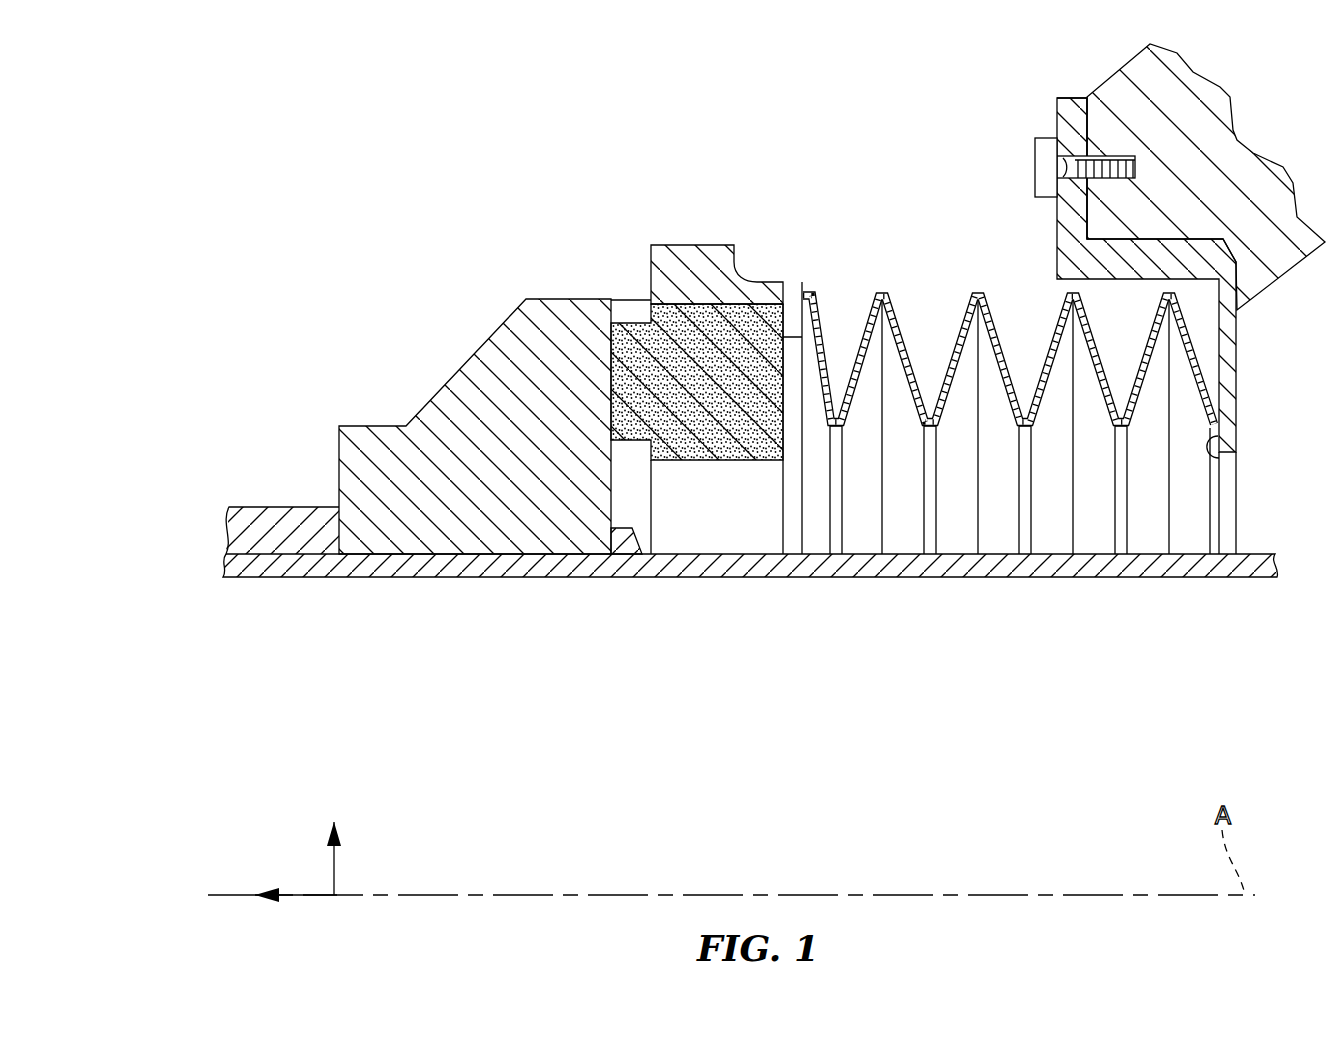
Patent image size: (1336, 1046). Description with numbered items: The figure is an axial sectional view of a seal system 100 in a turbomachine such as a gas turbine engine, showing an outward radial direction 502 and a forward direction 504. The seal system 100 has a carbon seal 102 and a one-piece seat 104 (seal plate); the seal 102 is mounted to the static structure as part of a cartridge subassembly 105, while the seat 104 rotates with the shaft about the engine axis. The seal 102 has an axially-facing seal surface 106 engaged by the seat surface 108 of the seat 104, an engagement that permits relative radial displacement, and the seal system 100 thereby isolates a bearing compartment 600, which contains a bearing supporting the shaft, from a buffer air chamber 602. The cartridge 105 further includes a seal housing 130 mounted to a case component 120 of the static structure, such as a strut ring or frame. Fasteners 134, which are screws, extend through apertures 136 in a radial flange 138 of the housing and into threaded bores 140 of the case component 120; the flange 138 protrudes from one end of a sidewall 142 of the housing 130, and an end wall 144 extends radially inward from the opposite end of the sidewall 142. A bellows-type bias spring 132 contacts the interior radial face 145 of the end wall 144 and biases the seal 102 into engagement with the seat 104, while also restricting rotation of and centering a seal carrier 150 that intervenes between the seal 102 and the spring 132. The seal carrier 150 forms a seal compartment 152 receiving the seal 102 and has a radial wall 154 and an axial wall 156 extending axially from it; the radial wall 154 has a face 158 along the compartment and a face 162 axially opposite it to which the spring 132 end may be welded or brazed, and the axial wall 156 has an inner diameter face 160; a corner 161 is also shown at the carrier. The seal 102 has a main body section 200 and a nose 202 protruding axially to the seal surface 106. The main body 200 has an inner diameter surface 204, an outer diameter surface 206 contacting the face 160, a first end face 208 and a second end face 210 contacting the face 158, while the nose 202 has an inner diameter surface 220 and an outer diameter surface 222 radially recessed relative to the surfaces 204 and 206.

The seal system 100 is at (613, 168).
The seal 102 is at (689, 470).
The seat 104 is at (420, 499).
The cartridge subassembly 105 is at (807, 160).
The seal surface 106 is at (611, 373).
The seat surface 108 is at (636, 425).
The case component 120 is at (1149, 134).
The seal housing 130 is at (903, 238).
The bias spring 132 is at (917, 362).
The fastener 134 is at (1042, 167).
The aperture 136 is at (1053, 185).
The radial flange 138 is at (1064, 115).
The threaded bore 140 is at (1068, 115).
The sidewall 142 is at (1182, 258).
The end wall 144 is at (1233, 412).
The interior radial face 145 is at (1221, 456).
The seal carrier 150 is at (677, 233).
The seal compartment 152 is at (752, 313).
The radial wall 154 is at (794, 312).
The axial wall 156 is at (685, 277).
The face 158 is at (773, 326).
The face 160 is at (653, 384).
The corner 161 is at (737, 243).
The face 162 is at (817, 322).
The main body section 200 is at (748, 437).
The nose 202 is at (611, 419).
The inner diameter surface 204 is at (717, 463).
The outer diameter surface 206 is at (668, 330).
The first end face 208 is at (636, 322).
The second end face 210 is at (826, 392).
The inner diameter surface 220 is at (610, 461).
The outer diameter surface 222 is at (630, 312).
The outward radial direction 502 is at (336, 862).
The forward direction 504 is at (311, 893).
The bearing compartment 600 is at (254, 354).
The buffer air chamber 602 is at (1272, 526).